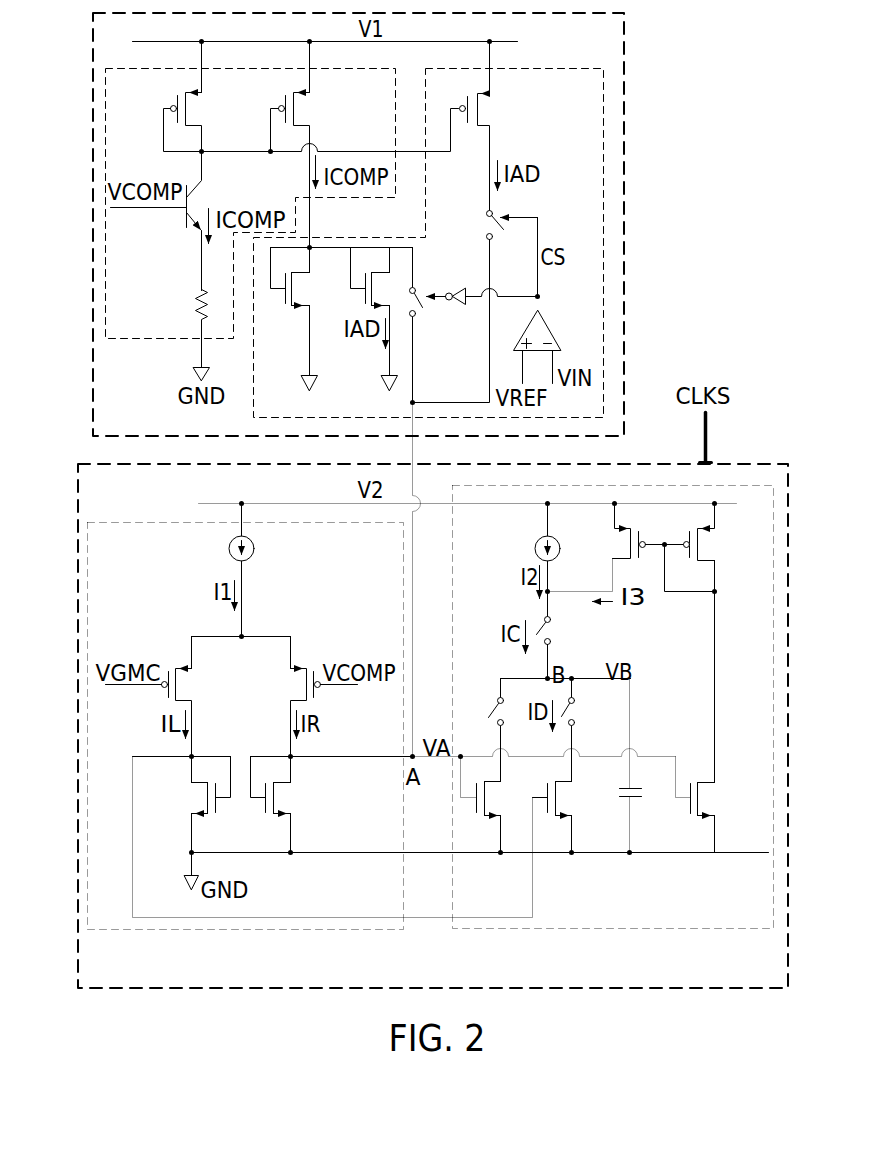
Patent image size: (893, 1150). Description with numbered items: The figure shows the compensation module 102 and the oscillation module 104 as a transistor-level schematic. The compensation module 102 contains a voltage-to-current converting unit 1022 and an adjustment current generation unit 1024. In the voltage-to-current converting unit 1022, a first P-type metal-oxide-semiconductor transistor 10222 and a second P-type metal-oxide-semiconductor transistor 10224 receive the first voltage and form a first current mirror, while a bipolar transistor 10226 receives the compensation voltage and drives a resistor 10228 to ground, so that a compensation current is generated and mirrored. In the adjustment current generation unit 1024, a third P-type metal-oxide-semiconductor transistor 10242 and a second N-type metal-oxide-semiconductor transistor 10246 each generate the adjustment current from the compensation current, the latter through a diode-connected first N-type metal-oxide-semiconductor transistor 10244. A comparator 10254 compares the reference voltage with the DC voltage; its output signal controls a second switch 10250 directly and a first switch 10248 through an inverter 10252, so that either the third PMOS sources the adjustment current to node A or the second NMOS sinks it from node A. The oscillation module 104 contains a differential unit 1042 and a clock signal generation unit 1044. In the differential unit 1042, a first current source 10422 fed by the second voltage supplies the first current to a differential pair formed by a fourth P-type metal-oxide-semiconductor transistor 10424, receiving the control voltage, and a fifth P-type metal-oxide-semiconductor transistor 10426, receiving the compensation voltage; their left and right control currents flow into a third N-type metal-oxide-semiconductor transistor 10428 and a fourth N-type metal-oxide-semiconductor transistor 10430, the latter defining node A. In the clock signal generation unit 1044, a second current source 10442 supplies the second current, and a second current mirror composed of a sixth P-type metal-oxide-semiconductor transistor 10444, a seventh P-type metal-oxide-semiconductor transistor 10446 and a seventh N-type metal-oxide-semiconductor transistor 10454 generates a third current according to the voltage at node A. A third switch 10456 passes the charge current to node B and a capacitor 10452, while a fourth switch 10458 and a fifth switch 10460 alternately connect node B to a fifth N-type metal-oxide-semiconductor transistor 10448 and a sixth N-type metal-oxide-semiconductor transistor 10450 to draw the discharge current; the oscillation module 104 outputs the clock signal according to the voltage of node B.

The compensation module 102 is at (624, 72).
The voltage-to-current converting unit 1022 is at (127, 340).
The adjustment current generation unit 1024 is at (570, 67).
The first P-type metal-oxide-semiconductor transistor 10222 is at (204, 116).
The second P-type metal-oxide-semiconductor transistor 10224 is at (312, 116).
The bipolar transistor 10226 is at (218, 192).
The resistor 10228 is at (192, 295).
The third P-type metal-oxide-semiconductor transistor 10242 is at (491, 105).
The first N-type metal-oxide-semiconductor transistor 10244 is at (310, 287).
The second N-type metal-oxide-semiconductor transistor 10246 is at (392, 285).
The first switch 10248 is at (419, 313).
The second switch 10250 is at (484, 217).
The inverter 10252 is at (450, 289).
The comparator 10254 is at (565, 329).
The oscillation module 104 is at (755, 462).
The differential unit 1042 is at (235, 931).
The clock signal generation unit 1044 is at (538, 930).
The first current source 10422 is at (253, 547).
The fourth P-type metal-oxide-semiconductor transistor 10424 is at (192, 682).
The fifth P-type metal-oxide-semiconductor transistor 10426 is at (287, 687).
The third N-type metal-oxide-semiconductor transistor 10428 is at (188, 797).
The fourth N-type metal-oxide-semiconductor transistor 10430 is at (292, 797).
The second current source 10442 is at (534, 552).
The sixth P-type metal-oxide-semiconductor transistor 10444 is at (615, 535).
The seventh P-type metal-oxide-semiconductor transistor 10446 is at (730, 543).
The fifth N-type metal-oxide-semiconductor transistor 10448 is at (503, 798).
The sixth N-type metal-oxide-semiconductor transistor 10450 is at (570, 793).
The capacitor 10452 is at (656, 799).
The seventh N-type metal-oxide-semiconductor transistor 10454 is at (730, 786).
The third switch 10456 is at (550, 634).
The fourth switch 10458 is at (489, 695).
The fifth switch 10460 is at (590, 707).